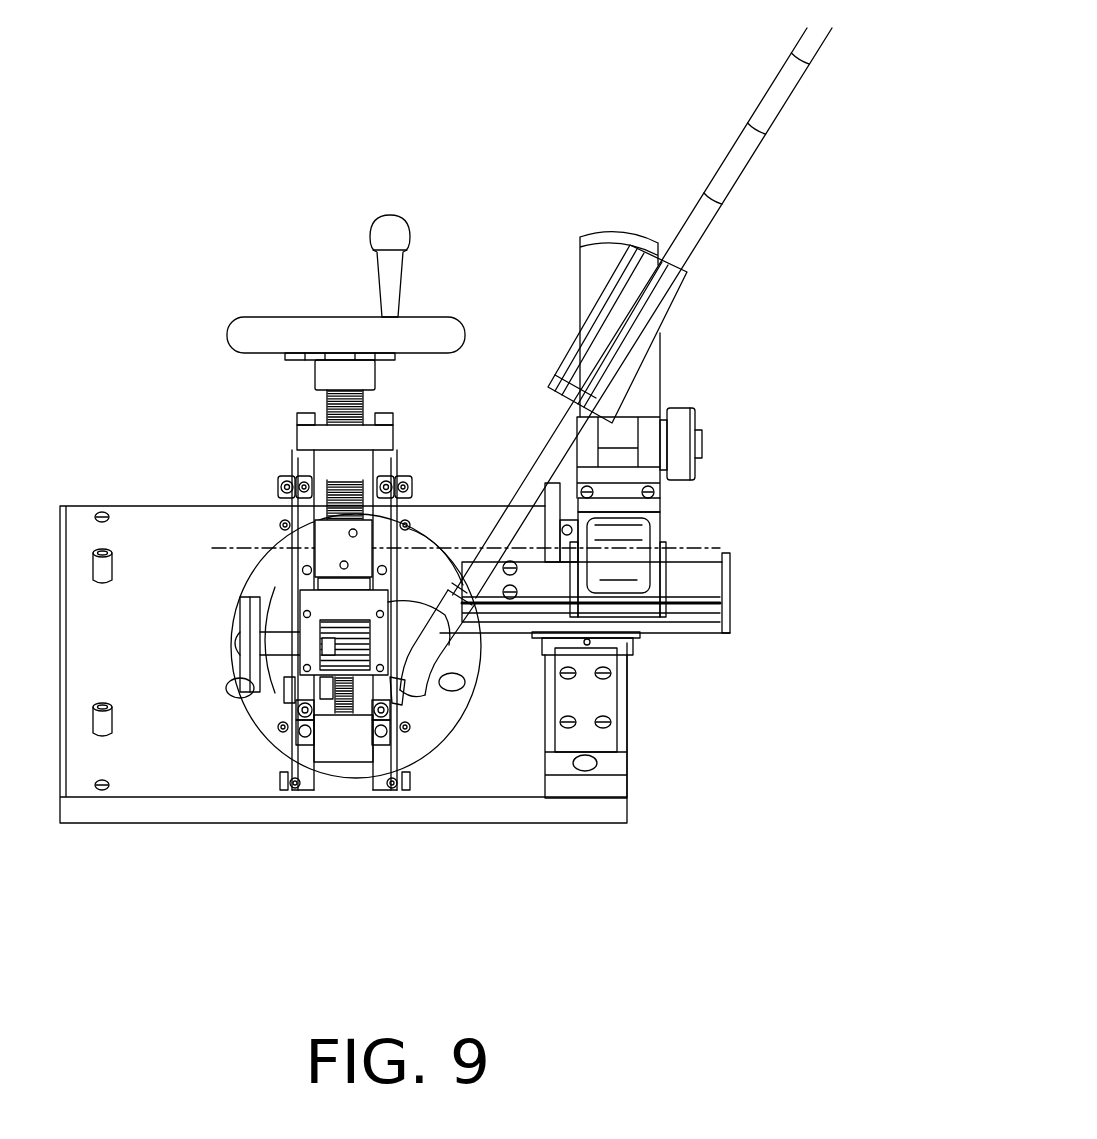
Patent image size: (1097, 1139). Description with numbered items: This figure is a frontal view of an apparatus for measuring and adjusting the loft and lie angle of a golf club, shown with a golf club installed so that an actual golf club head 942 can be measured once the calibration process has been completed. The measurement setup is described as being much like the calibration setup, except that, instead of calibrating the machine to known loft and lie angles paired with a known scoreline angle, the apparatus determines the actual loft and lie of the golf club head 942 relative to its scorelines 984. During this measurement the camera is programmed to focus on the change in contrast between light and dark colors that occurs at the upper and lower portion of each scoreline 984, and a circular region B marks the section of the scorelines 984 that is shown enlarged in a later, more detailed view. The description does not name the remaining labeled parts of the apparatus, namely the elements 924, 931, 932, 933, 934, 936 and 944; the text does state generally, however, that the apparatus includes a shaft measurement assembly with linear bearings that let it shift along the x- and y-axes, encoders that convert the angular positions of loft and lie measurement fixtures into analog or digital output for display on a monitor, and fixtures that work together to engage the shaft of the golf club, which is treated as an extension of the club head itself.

The handwheel 924 is at (316, 318).
The support column 934 is at (606, 230).
The clamp 936 is at (697, 280).
The adjustment knob 933 is at (688, 408).
The rod 944 is at (788, 62).
The rail 932 is at (738, 603).
The post 931 is at (632, 748).
The golf club head 942 is at (450, 690).
The scorelines 984 is at (397, 787).
The circular region B is at (275, 760).